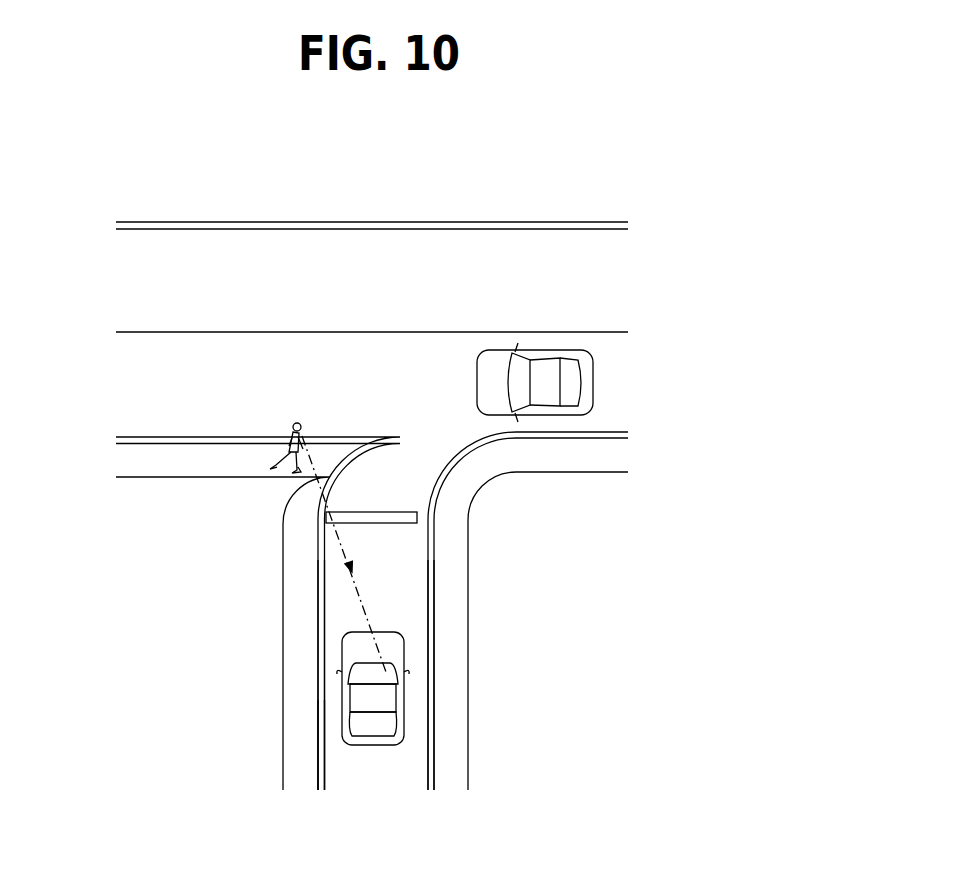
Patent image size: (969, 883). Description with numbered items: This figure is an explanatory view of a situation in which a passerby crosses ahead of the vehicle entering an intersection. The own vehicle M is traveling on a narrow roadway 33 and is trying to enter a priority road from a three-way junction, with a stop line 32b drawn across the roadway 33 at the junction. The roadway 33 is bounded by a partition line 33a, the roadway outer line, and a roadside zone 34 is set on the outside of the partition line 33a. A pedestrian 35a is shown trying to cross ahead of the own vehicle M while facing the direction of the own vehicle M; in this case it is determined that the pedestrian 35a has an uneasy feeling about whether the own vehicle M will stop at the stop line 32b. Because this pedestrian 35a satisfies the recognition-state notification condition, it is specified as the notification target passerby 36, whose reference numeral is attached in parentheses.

The stop line 32b is at (370, 510).
The roadway 33 is at (406, 570).
The partition line 33a is at (323, 792).
The roadside zone 34 is at (283, 680).
The pedestrian 35a is at (280, 433).
The notification target passerby 36 is at (244, 428).
The own vehicle M is at (374, 748).